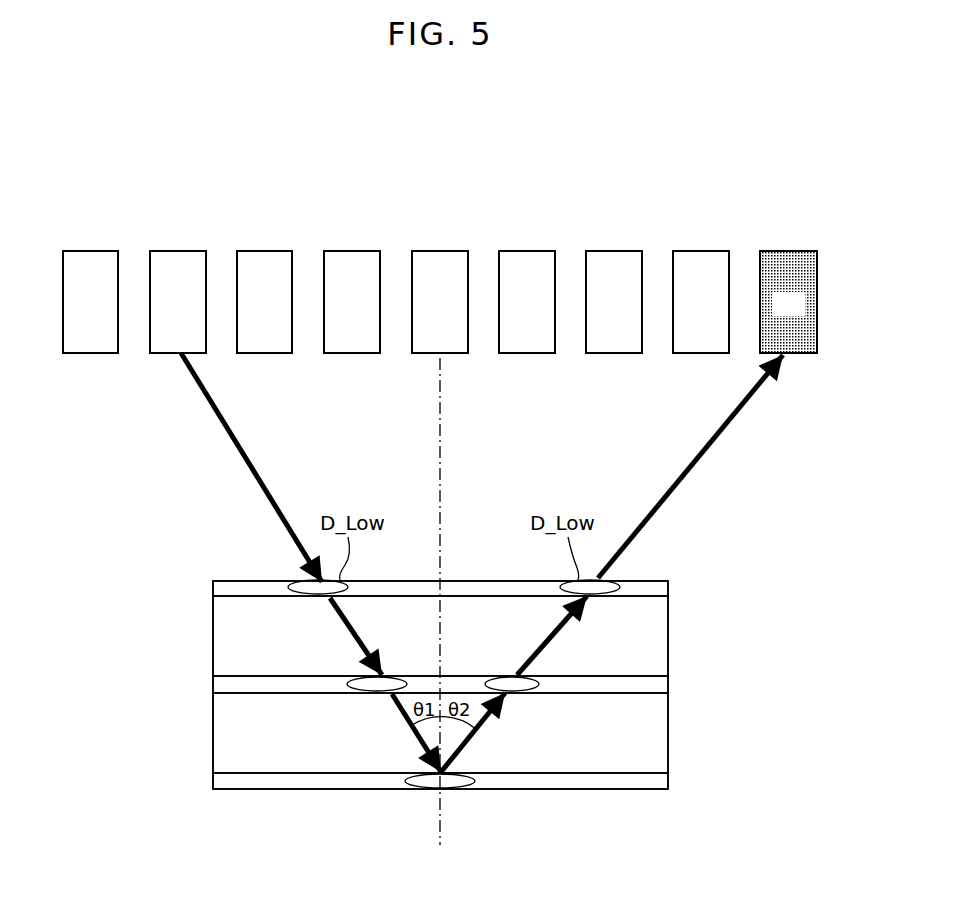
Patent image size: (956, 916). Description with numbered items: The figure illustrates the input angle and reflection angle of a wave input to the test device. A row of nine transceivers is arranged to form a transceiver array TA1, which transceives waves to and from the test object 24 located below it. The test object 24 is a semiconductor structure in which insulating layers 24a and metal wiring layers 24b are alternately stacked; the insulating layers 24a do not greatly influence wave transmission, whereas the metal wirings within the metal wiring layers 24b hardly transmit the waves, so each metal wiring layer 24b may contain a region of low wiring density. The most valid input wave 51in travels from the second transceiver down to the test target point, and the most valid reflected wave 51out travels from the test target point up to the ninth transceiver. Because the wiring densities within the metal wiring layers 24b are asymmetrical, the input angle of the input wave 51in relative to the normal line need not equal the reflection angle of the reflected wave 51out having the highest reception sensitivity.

The transceiver array TA1 is at (63, 242).
The test object 24 is at (133, 582).
The insulating layers 24a is at (213, 636).
The metal wiring layers 24b is at (213, 586).
The input wave 51in is at (237, 456).
The reflected wave 51out is at (700, 458).